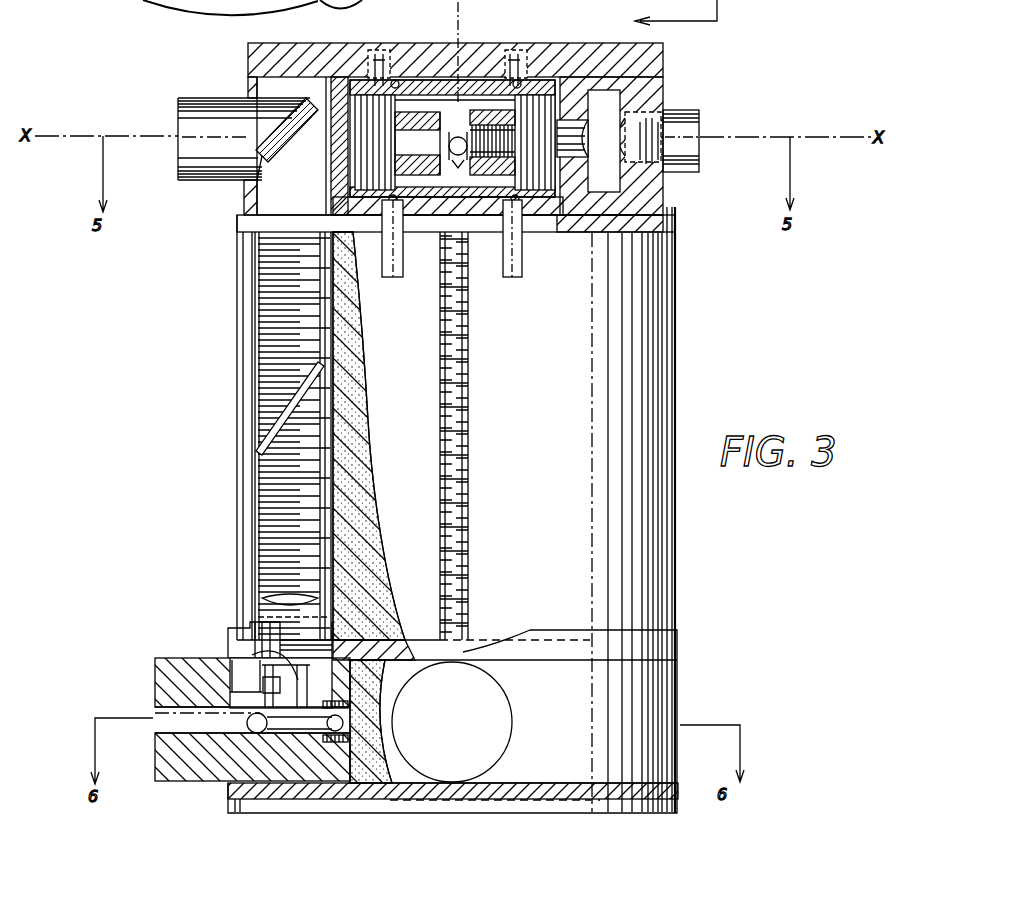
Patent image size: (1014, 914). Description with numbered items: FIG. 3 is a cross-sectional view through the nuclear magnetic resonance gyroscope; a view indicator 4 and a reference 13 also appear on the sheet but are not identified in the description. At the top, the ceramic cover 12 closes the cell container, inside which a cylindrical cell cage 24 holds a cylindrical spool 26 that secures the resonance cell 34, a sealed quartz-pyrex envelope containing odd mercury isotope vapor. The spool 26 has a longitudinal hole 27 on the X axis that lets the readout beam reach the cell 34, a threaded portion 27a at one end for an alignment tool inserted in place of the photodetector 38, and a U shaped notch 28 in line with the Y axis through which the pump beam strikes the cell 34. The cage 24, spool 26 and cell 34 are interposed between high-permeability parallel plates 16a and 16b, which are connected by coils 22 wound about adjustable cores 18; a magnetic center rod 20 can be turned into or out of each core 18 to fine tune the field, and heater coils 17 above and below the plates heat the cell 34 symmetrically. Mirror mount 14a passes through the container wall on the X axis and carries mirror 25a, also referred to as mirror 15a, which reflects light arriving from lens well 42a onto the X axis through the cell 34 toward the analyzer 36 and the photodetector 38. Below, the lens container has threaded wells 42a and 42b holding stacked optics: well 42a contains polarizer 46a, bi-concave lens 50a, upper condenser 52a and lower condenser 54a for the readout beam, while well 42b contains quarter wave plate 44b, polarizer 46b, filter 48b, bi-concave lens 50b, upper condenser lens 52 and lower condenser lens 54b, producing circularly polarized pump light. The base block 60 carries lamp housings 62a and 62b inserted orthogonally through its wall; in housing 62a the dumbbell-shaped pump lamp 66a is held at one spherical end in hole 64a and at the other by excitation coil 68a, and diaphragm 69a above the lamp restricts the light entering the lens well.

The direction arrow 4 is at (664, 16).
The cover 12 is at (578, 25).
The passage 13 is at (576, 130).
The mirror mount 14a is at (198, 97).
The mirror 15a is at (330, 95).
The upper parallel plate 16a is at (437, 79).
The lower parallel plate 16b is at (425, 220).
The heater coil 17 is at (518, 77).
The adjustable core 18 is at (367, 130).
The adjustable magnetic center rod 20 is at (380, 54).
The coil 22 is at (357, 173).
The cell cage 24 is at (462, 92).
The mirror 25a is at (277, 132).
The cylindrical spool 26 is at (490, 95).
The hole 27 is at (426, 149).
The threaded portion 27a is at (527, 215).
The U shaped notch 28 is at (463, 215).
The resonance cell 34 is at (455, 137).
The analyzer 36 is at (618, 104).
The photodetector 38 is at (682, 113).
The lens well 42a is at (265, 295).
The lens well 42b is at (470, 280).
The quarter wave plate 44b is at (463, 333).
The polarizer 46a is at (252, 400).
The polarizer 46b is at (463, 388).
The filter 48b is at (467, 497).
The bi-concave lens 50a is at (253, 538).
The bi-concave lens 50b is at (467, 547).
The upper condenser lens 52 is at (467, 593).
The upper condenser 52a is at (250, 587).
The lower condenser 54a is at (238, 622).
The lower condenser lens 54b is at (470, 630).
The base block 60 is at (676, 685).
The lamp housing 62a is at (160, 757).
The lamp housing 62b is at (466, 728).
The hole 64a is at (163, 720).
The pump lamp 66a is at (297, 726).
The excitation coil 68a is at (343, 703).
The diaphragm 69a is at (228, 645).